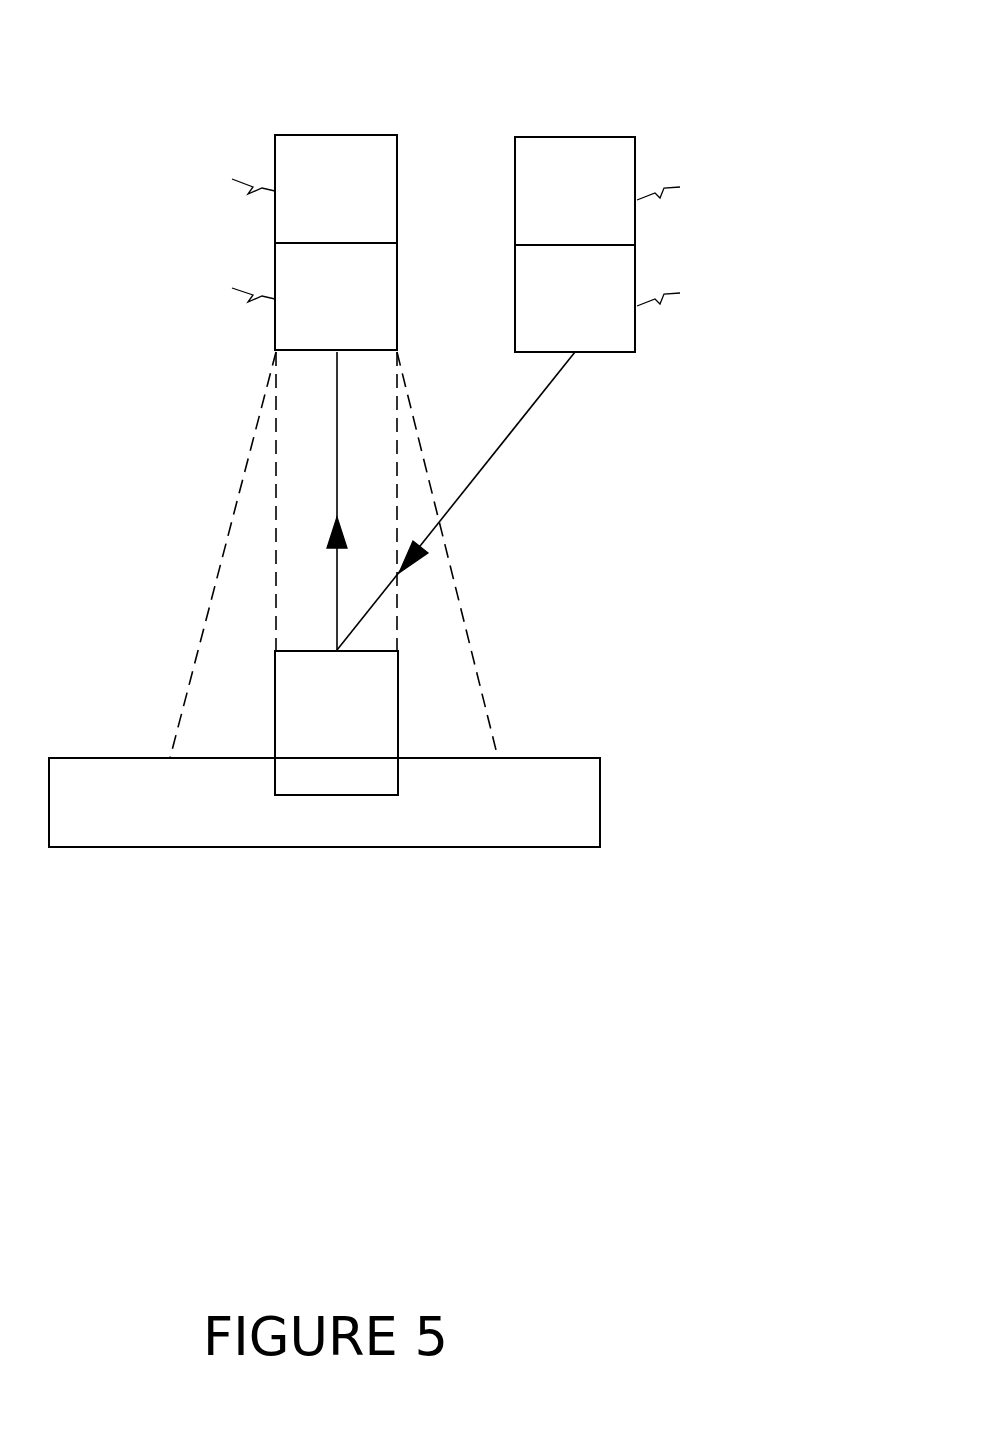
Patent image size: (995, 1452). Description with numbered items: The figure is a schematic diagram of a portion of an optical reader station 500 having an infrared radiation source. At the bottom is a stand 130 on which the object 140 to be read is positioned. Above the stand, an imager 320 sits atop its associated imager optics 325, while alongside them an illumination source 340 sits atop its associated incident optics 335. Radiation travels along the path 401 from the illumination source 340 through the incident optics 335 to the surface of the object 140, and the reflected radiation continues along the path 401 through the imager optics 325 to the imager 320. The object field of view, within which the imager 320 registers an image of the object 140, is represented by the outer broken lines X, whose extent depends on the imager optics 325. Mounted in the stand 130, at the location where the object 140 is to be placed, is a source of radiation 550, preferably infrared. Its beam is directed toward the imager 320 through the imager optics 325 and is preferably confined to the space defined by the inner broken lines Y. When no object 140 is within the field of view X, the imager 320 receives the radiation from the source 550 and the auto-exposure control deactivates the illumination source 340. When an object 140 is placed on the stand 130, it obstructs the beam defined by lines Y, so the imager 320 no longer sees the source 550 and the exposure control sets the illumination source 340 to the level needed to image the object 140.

The optical reader station 500 is at (586, 41).
The imager 320 is at (260, 189).
The imager optics 325 is at (261, 296).
The illumination source 340 is at (688, 191).
The incident optics 335 is at (646, 298).
The path 401 is at (451, 501).
The object 140 is at (336, 704).
The source of radiation 550 is at (336, 776).
The stand 130 is at (324, 802).
The broken lines representing object field of view X is at (340, 555).
The broken lines defining radiation beam space Y is at (331, 501).